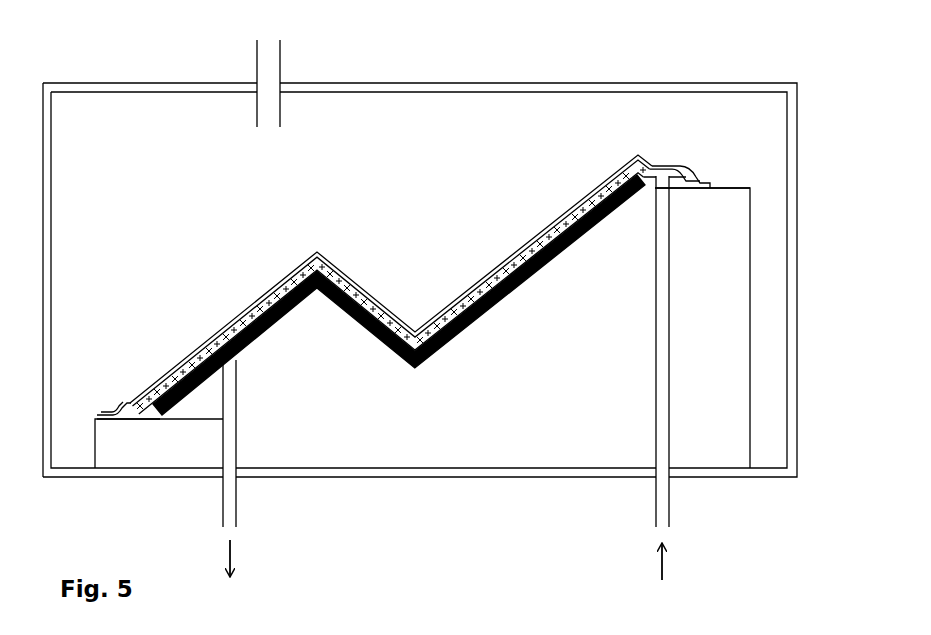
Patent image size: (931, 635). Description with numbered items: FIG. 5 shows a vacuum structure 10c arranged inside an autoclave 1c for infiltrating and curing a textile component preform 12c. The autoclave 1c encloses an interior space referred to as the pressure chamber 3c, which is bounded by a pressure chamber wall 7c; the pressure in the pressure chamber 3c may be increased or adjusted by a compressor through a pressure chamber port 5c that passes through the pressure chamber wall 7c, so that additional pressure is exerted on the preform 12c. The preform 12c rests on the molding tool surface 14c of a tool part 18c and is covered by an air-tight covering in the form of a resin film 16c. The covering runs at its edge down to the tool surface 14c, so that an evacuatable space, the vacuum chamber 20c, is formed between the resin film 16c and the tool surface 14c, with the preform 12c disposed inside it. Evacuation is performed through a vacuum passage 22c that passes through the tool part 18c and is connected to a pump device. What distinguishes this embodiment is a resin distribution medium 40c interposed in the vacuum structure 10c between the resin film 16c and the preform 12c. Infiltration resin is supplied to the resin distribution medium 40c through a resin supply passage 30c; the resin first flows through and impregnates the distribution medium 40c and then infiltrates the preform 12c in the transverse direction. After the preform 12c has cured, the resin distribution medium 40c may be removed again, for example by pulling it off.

The autoclave 1c is at (420, 245).
The pressure chamber 3c is at (415, 120).
The pressure chamber port 5c is at (272, 58).
The pressure chamber wall 7c is at (578, 87).
The vacuum structure 10c is at (403, 297).
The preform 12c is at (280, 316).
The molding tool surface 14c is at (727, 186).
The resin film 16c is at (340, 276).
The tool part 18c is at (708, 328).
The vacuum chamber 20c is at (653, 173).
The vacuum passage 22c is at (232, 442).
The resin supply passage 30c is at (662, 410).
The resin distribution medium 40c is at (515, 258).